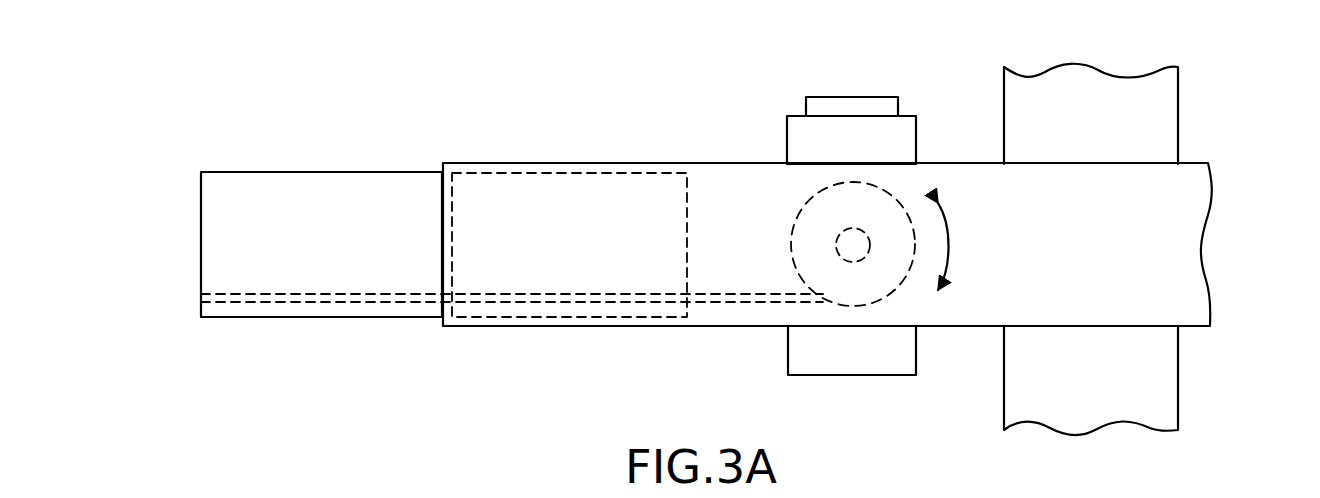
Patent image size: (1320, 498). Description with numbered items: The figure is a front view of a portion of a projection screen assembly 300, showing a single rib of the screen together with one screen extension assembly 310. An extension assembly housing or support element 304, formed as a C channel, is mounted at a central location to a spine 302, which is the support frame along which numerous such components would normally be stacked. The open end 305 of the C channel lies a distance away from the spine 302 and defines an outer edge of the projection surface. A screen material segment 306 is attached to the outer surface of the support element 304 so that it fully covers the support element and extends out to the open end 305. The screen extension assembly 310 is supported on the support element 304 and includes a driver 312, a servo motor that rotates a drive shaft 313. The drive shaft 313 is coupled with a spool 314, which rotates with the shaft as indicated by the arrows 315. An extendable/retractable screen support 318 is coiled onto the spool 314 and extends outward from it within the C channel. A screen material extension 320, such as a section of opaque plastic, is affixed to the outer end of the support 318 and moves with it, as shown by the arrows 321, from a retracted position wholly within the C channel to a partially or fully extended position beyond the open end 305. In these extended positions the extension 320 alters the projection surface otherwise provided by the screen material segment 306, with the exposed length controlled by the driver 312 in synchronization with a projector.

The projection screen assembly 300 is at (240, 92).
The spine 302 is at (1173, 87).
The extension assembly housing/support element 304 is at (1196, 162).
The open end 305 is at (443, 162).
The screen material segment 306 is at (1195, 188).
The screen extension assembly 310 is at (874, 233).
The driver 312 is at (917, 134).
The drive shaft 313 is at (862, 238).
The spool 314 is at (897, 285).
The arrows 315 is at (951, 245).
The extendable/retractable screen support 318 is at (716, 303).
The screen material extension 320 is at (305, 171).
The arrows 321 is at (356, 341).